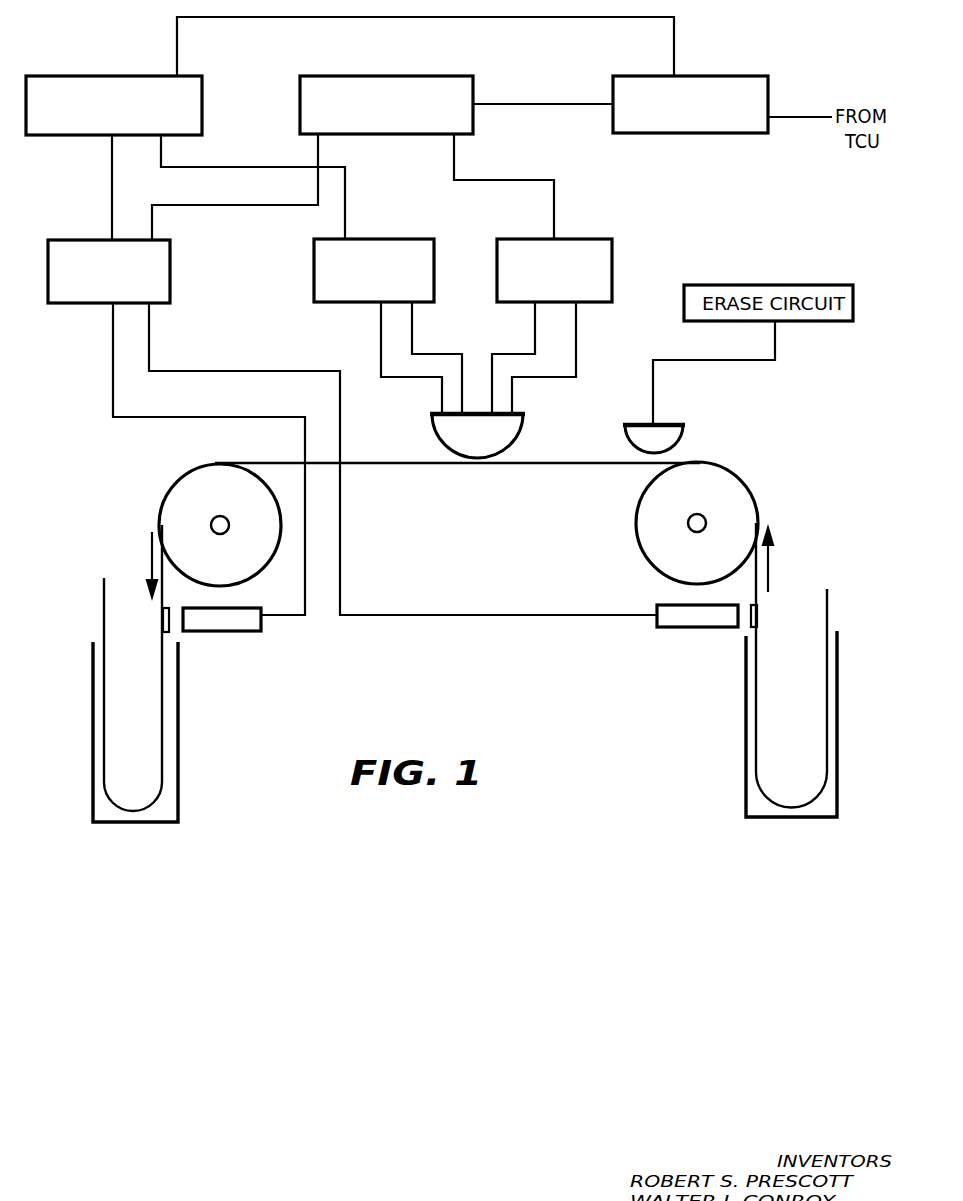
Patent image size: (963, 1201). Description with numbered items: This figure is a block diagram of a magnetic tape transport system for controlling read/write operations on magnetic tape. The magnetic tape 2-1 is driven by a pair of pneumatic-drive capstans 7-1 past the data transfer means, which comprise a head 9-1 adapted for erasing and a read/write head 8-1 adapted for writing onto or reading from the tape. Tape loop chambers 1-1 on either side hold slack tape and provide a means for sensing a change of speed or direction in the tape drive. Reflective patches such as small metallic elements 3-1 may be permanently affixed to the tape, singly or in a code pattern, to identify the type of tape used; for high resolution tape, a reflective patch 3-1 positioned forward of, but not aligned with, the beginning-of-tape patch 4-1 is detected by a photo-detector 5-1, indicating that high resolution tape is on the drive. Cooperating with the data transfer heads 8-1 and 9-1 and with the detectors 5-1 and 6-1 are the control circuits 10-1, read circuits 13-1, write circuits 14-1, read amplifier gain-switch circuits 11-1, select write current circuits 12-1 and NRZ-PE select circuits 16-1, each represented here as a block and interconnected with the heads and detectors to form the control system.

The tape loop chamber 1-1 is at (178, 742).
The magnetic tape 2-1 is at (558, 462).
The reflective patch 3-1 is at (169, 625).
The beginning-of-tape patch 4-1 is at (745, 621).
The photo-detector 5-1 is at (245, 632).
The detector 6-1 is at (672, 628).
The pneumatic-drive capstan 7-1 is at (167, 500).
The read/write head 8-1 is at (432, 427).
The erase head 9-1 is at (668, 425).
The control circuits 10-1 is at (170, 271).
The read amplifier gain-switch circuits 11-1 is at (77, 136).
The select write current circuits 12-1 is at (473, 118).
The read circuits 13-1 is at (405, 239).
The write circuits 14-1 is at (605, 239).
The NRZ-PE select circuits 16-1 is at (768, 93).